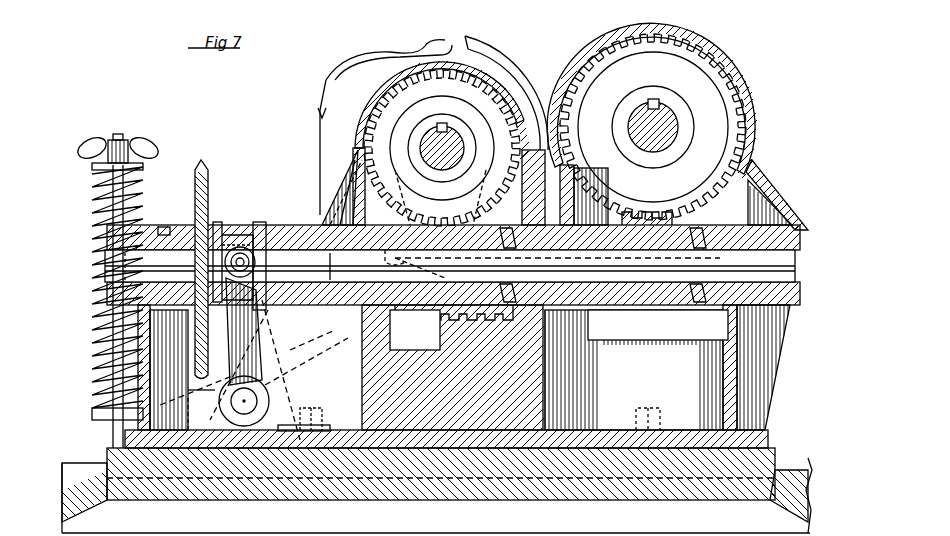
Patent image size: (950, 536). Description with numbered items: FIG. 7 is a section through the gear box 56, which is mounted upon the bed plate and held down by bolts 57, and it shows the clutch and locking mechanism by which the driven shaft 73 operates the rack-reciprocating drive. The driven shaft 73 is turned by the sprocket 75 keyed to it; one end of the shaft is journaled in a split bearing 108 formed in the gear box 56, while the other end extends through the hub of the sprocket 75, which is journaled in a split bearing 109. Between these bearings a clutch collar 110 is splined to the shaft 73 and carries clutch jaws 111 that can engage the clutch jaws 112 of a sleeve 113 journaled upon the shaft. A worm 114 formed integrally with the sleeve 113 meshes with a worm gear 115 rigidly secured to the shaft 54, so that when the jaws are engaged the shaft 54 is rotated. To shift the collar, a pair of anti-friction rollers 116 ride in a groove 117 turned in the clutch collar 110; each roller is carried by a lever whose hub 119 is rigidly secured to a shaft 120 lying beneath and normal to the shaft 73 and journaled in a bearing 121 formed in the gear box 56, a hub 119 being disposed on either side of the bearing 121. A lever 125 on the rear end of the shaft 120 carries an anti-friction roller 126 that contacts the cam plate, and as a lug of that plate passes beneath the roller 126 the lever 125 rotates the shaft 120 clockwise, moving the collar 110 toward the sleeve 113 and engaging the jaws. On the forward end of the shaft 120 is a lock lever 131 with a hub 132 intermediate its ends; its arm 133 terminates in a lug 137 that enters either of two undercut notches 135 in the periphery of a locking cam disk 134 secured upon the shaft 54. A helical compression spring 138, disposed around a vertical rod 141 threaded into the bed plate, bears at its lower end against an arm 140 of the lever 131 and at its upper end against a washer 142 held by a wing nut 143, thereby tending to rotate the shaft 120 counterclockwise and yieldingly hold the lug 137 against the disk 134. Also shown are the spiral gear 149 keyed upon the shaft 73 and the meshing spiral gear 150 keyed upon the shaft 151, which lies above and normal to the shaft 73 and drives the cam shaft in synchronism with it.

The shaft 54 is at (460, 128).
The gear box 56 is at (762, 152).
The bolts 57 is at (648, 408).
The driven shaft 73 is at (108, 263).
The sprocket 75 is at (204, 160).
The split bearing 108 is at (776, 226).
The split bearing 109 is at (148, 226).
The clutch collar 110 is at (226, 250).
The clutch jaws 111 is at (268, 258).
The clutch jaws 112 is at (285, 365).
The sleeve 113 is at (318, 226).
The worm 114 is at (597, 254).
The worm gear 115 is at (468, 72).
The anti-friction rollers 116 is at (242, 258).
The groove 117 is at (222, 236).
The hub 119 is at (236, 418).
The shaft 120 is at (248, 406).
The bearing 121 is at (222, 415).
The lever 125 is at (306, 357).
The anti-friction roller 126 is at (247, 250).
The lock lever 131 is at (325, 390).
The hub 132 is at (300, 426).
The arm 133 is at (454, 311).
The locking cam disk 134 is at (466, 36).
The notches 135 is at (445, 40).
The lug 137 is at (508, 259).
The helical compression spring 138 is at (98, 338).
The arm 140 is at (155, 500).
The rod 141 is at (108, 437).
The washer 142 is at (98, 165).
The wing nut 143 is at (142, 142).
The spiral gear 149 is at (656, 212).
The spiral gear 150 is at (715, 108).
The shaft 151 is at (633, 122).